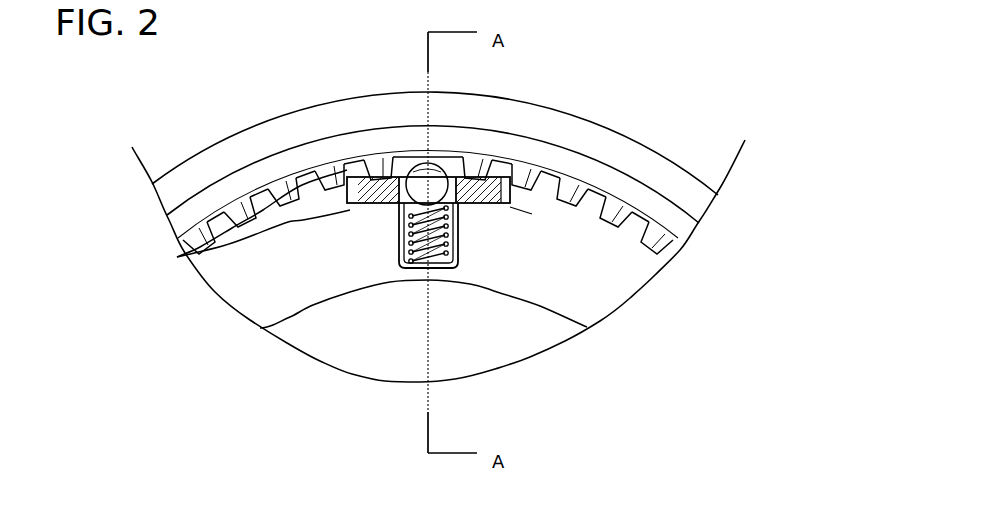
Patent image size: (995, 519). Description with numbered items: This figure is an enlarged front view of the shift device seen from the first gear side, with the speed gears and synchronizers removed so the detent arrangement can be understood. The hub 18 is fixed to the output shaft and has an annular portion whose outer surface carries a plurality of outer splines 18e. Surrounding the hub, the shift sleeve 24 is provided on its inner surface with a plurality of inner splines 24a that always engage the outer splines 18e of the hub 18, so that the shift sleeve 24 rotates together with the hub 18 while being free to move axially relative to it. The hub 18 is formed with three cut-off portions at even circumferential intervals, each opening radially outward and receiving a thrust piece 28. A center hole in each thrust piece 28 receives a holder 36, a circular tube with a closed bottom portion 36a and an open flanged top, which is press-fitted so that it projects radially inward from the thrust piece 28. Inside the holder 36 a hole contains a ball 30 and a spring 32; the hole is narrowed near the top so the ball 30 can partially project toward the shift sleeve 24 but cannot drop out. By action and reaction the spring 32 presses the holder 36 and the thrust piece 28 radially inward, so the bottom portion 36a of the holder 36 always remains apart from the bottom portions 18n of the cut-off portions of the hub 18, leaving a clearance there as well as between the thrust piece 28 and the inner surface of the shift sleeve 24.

The hub 18 is at (297, 274).
The outer splines 18e is at (228, 235).
The bottom portions of the cut-off portions 18n is at (416, 272).
The shift sleeve 24 is at (637, 200).
The inner splines 24a is at (568, 197).
The thrust piece 28 is at (372, 192).
The ball 30 is at (437, 186).
The spring 32 is at (460, 220).
The holder 36 is at (462, 253).
The bottom portion 36a is at (443, 277).